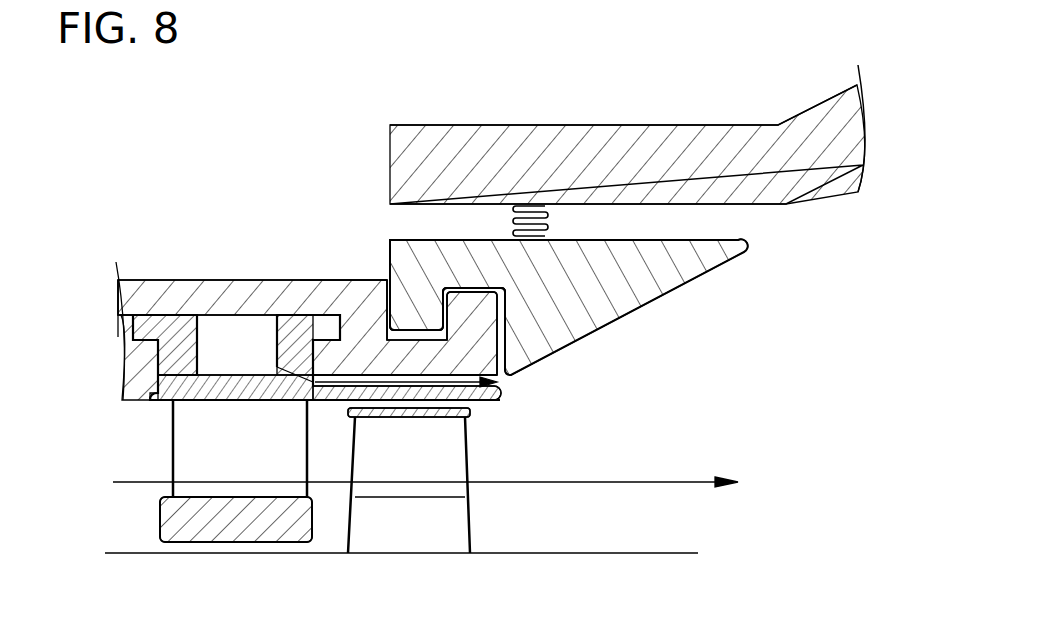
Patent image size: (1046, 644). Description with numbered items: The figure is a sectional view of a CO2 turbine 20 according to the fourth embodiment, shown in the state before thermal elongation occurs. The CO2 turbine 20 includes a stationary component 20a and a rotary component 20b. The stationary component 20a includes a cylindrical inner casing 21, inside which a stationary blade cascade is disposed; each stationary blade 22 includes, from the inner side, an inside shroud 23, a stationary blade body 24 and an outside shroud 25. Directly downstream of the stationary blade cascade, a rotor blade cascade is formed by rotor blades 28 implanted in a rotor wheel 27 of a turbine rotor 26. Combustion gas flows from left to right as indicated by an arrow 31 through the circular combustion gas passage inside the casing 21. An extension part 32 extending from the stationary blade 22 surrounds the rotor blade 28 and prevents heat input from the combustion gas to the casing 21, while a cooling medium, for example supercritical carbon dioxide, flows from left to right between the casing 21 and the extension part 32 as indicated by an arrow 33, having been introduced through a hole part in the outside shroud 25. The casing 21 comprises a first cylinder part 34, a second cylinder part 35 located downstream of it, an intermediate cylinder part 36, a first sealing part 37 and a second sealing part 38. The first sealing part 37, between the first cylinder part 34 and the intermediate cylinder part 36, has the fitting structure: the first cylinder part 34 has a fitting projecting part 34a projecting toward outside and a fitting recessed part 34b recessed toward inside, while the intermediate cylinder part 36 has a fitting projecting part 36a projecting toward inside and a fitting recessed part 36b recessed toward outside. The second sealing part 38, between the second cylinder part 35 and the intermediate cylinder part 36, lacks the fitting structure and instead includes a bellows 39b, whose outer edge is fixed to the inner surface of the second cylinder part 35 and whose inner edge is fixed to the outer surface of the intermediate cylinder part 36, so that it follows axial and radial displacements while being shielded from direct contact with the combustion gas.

The CO2 turbine 20 is at (165, 173).
The stationary component 20a is at (735, 307).
The rotary component 20b is at (735, 553).
The inner casing 21 is at (95, 287).
The stationary blade 22 is at (166, 463).
The inside shroud 23 is at (162, 523).
The stationary blade body 24 is at (187, 435).
The outside shroud 25 is at (195, 397).
The turbine rotor 26 is at (567, 570).
The rotor wheel 27 is at (453, 525).
The rotor blade 28 is at (453, 466).
The arrow 31 is at (643, 480).
The extension part 32 is at (502, 398).
The arrow 33 is at (497, 383).
The first cylinder part 34 is at (226, 295).
The fitting projecting part 34a is at (490, 305).
The fitting recessed part 34b is at (330, 290).
The second cylinder part 35 is at (735, 135).
The intermediate cylinder part 36 is at (657, 267).
The fitting projecting part 36a is at (418, 310).
The fitting recessed part 36b is at (468, 300).
The first sealing part 37 is at (383, 268).
The second sealing part 38 is at (554, 212).
The bellows 39b is at (545, 228).